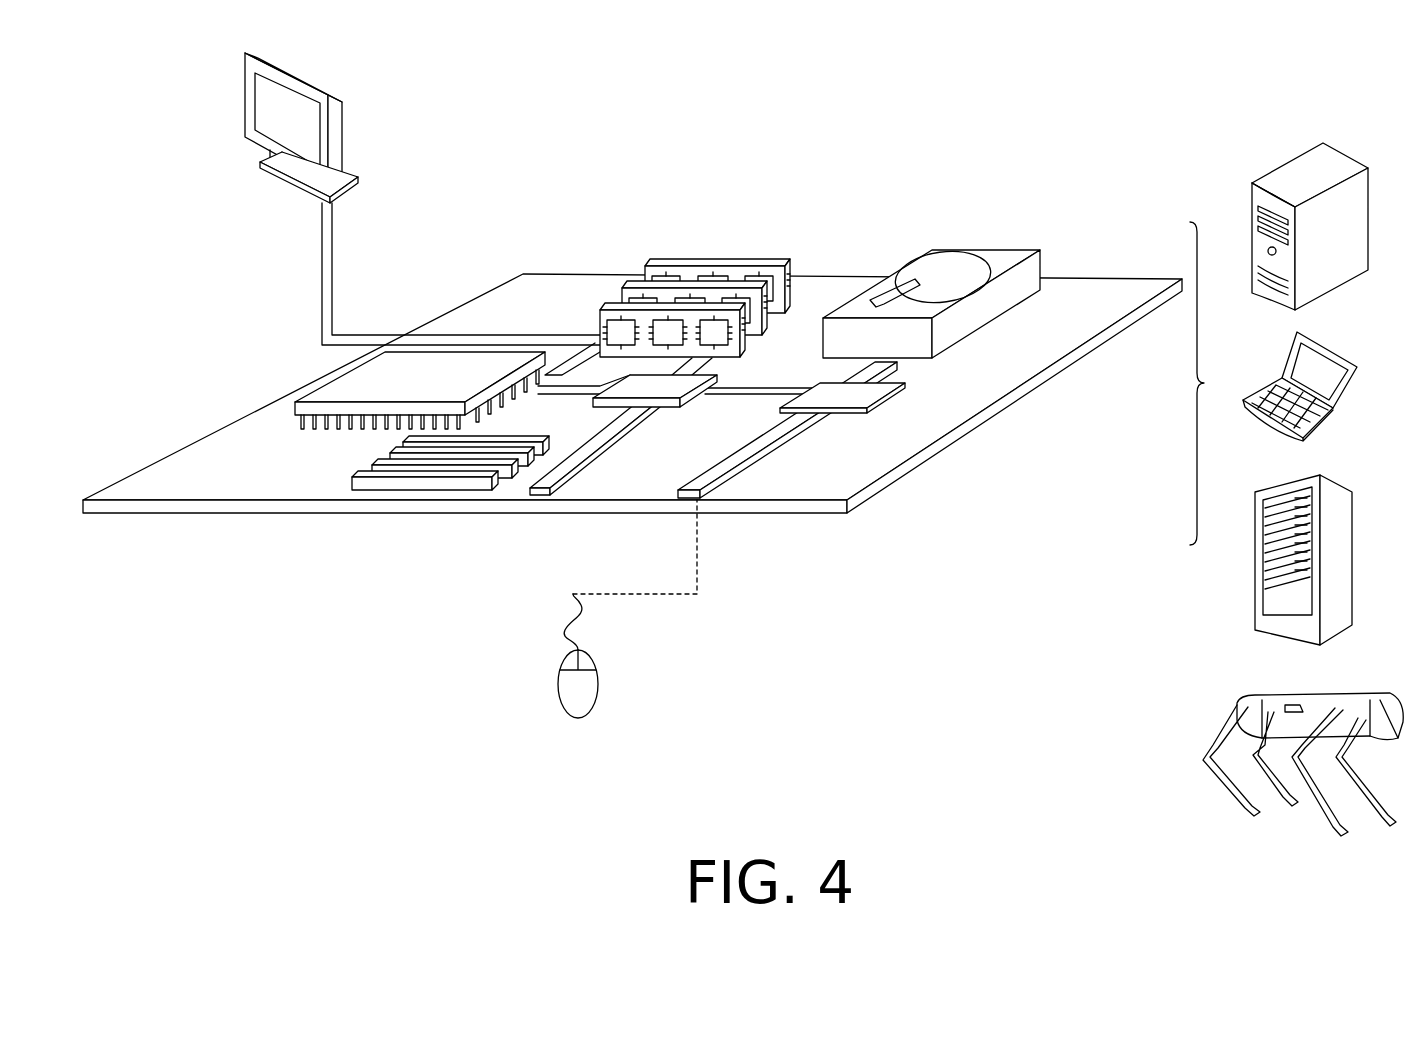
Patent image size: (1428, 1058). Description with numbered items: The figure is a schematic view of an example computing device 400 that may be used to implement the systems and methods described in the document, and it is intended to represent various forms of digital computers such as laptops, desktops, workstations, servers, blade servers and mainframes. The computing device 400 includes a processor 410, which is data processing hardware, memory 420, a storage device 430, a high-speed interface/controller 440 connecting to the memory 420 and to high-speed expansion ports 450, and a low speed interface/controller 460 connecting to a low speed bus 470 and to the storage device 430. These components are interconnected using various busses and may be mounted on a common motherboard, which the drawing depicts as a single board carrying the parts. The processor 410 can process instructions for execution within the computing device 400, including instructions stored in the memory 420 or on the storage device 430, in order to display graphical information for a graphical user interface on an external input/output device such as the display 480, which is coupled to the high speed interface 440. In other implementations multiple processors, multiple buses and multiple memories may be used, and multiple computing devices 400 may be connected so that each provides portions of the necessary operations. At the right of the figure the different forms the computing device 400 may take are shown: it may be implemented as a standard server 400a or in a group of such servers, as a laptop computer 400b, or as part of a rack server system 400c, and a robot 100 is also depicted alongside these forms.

The computing device 400 is at (799, 122).
The standard server 400a is at (1281, 165).
The laptop computer 400b is at (1335, 347).
The rack server system 400c is at (1345, 540).
The robot 100 is at (1350, 697).
The processor 410 is at (293, 402).
The memory 420 is at (715, 265).
The storage device 430 is at (981, 250).
The high-speed interface/controller 440 is at (662, 408).
The high-speed expansion ports 450 is at (354, 478).
The low speed interface/controller 460 is at (832, 394).
The low speed bus 470 is at (707, 494).
The display 480 is at (246, 107).